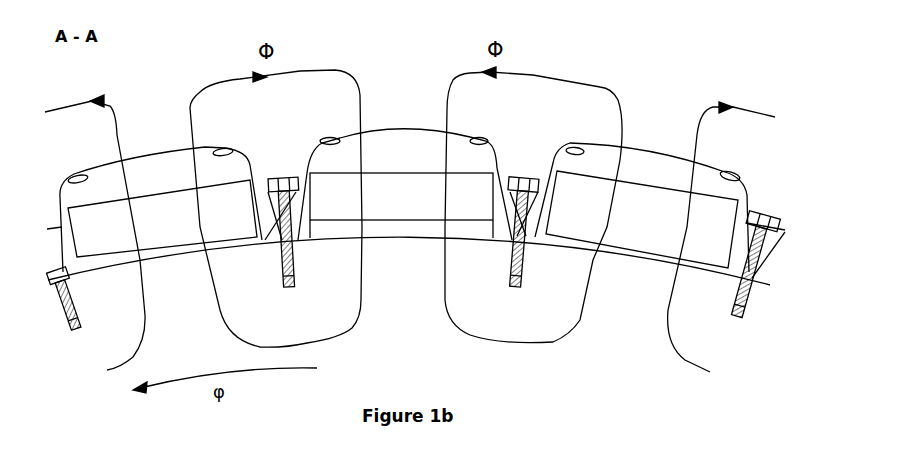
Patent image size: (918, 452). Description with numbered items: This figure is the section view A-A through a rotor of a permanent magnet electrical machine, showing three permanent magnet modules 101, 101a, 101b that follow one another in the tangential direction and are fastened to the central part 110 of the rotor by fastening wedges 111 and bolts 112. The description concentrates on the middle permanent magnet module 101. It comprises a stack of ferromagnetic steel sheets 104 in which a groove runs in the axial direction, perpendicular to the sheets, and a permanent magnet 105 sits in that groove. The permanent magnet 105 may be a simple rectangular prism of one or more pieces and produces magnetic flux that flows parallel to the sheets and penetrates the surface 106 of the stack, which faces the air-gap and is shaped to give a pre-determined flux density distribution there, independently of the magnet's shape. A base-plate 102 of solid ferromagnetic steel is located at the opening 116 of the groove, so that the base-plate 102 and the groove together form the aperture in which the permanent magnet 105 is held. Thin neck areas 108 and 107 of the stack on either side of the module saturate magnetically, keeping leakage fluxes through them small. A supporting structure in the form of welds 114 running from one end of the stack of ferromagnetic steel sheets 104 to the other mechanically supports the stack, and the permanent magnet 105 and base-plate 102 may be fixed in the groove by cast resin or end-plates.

The permanent magnet module 101 is at (407, 158).
The permanent magnet module 101a is at (163, 132).
The permanent magnet module 101b is at (657, 122).
The base-plate 102 is at (407, 229).
The stack of ferromagnetic steel sheets 104 is at (400, 164).
The permanent magnet 105 is at (482, 206).
The surface 106 is at (397, 127).
The neck area 107 is at (502, 163).
The neck area 108 is at (301, 159).
The central part of the rotor 110 is at (415, 369).
The fastening wedge 111 is at (267, 243).
The bolt 112 is at (277, 179).
The weld 114 is at (480, 140).
The opening of the groove 116 is at (463, 229).